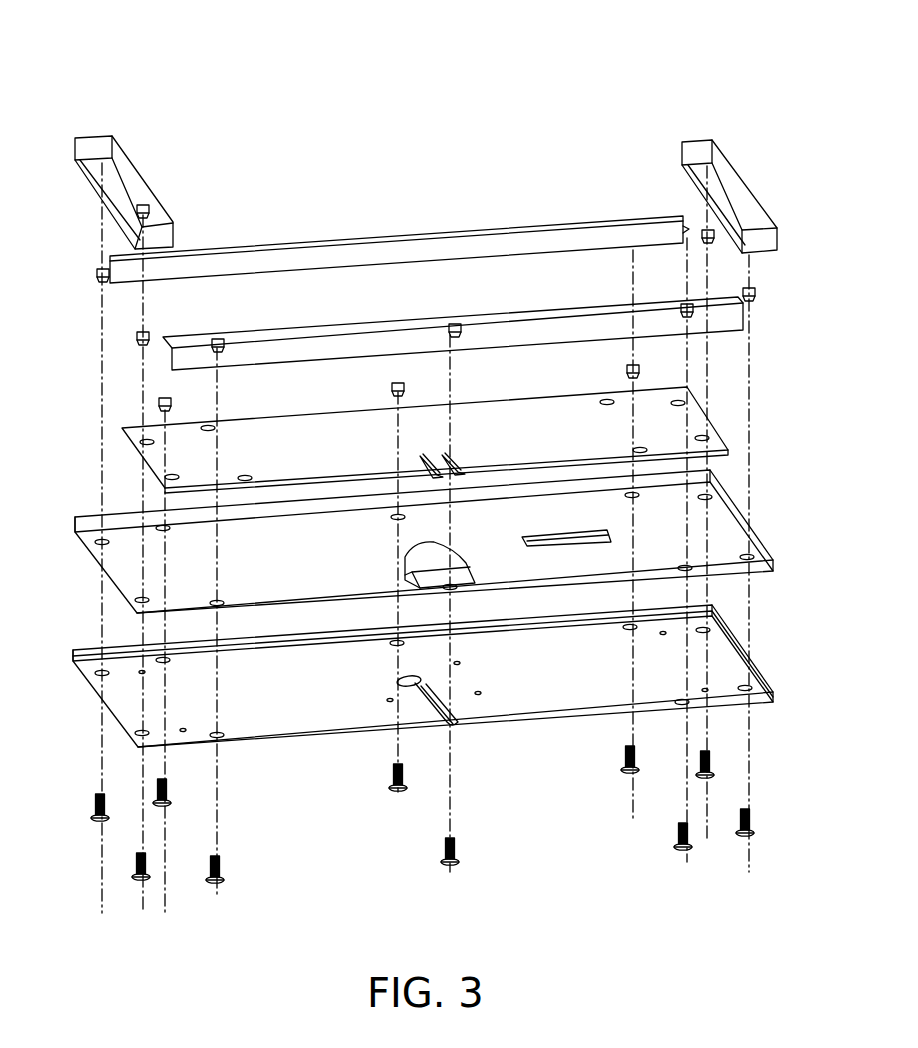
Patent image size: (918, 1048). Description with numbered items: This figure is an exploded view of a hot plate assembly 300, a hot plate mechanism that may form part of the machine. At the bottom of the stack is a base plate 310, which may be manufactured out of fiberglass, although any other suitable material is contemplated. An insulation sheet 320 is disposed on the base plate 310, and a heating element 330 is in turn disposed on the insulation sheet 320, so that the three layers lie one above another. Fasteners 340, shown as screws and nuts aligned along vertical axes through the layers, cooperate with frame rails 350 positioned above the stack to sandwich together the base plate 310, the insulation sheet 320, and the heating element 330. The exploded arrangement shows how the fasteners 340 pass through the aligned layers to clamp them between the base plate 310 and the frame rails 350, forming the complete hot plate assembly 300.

The hot plate assembly 300 is at (118, 56).
The base plate 310 is at (122, 697).
The insulation sheet 320 is at (113, 552).
The heating element 330 is at (147, 465).
The fasteners 340 is at (222, 884).
The frame rails 350 is at (400, 248).